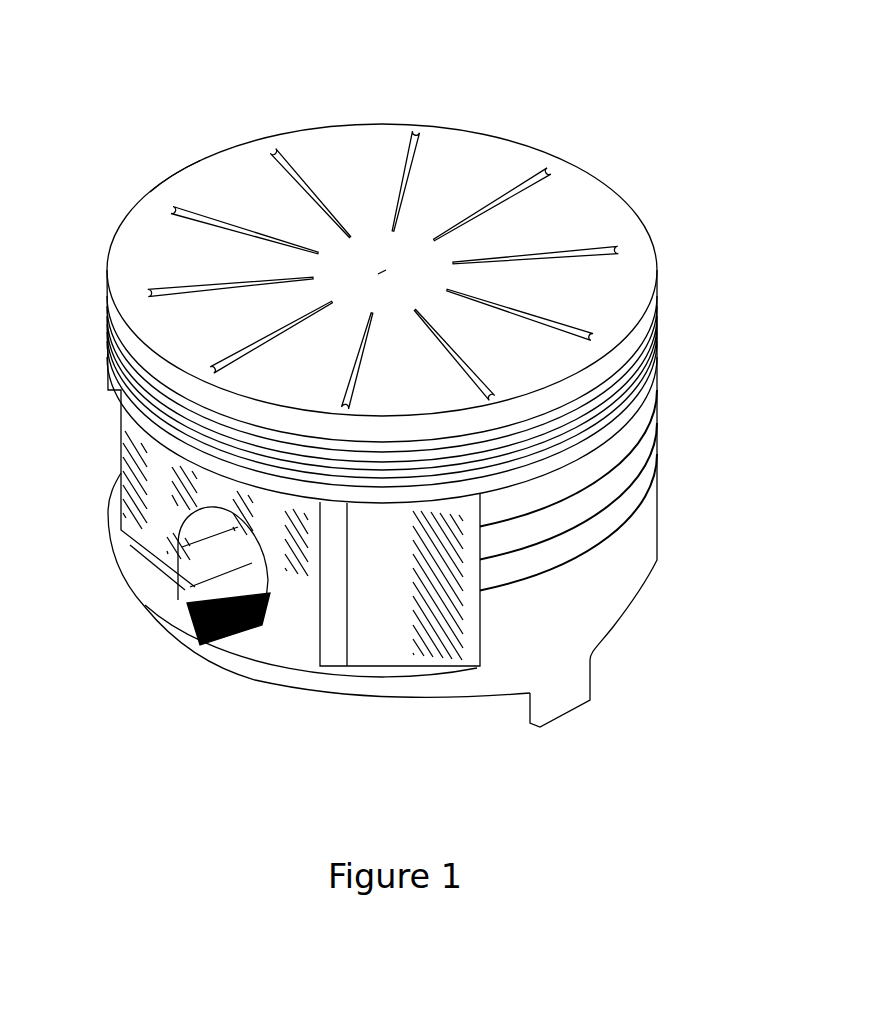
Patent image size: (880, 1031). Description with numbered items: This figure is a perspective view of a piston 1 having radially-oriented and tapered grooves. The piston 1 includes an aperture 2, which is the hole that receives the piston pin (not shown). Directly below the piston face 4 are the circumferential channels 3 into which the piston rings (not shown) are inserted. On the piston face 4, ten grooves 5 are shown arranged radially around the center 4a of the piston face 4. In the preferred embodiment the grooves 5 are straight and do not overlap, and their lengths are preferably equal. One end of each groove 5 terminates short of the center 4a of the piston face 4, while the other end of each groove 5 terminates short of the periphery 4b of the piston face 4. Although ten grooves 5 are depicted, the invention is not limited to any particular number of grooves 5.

The piston 1 is at (633, 543).
The aperture 2 is at (237, 593).
The circumferential channel 3 is at (655, 338).
The piston face 4 is at (568, 205).
The center 4a is at (383, 272).
The periphery 4b is at (171, 188).
The groove 5 is at (417, 137).